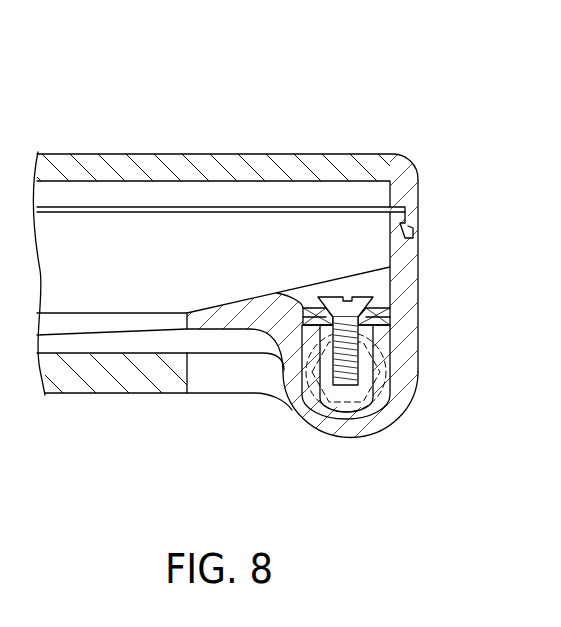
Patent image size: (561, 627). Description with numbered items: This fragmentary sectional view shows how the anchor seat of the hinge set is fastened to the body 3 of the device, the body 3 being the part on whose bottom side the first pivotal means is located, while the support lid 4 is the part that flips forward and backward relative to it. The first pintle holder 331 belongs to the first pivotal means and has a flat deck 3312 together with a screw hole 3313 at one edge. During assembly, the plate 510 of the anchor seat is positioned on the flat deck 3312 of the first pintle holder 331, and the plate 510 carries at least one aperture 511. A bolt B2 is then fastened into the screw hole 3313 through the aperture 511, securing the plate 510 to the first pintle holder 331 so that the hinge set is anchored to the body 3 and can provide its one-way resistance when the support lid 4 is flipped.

The body 3 is at (251, 140).
The support lid 4 is at (115, 393).
The first pintle holder 331 is at (368, 422).
The flat deck 3312 is at (384, 331).
The screw hole 3313 is at (362, 353).
The plate 510 is at (387, 313).
The aperture 511 is at (389, 322).
The bolt B2 is at (376, 300).